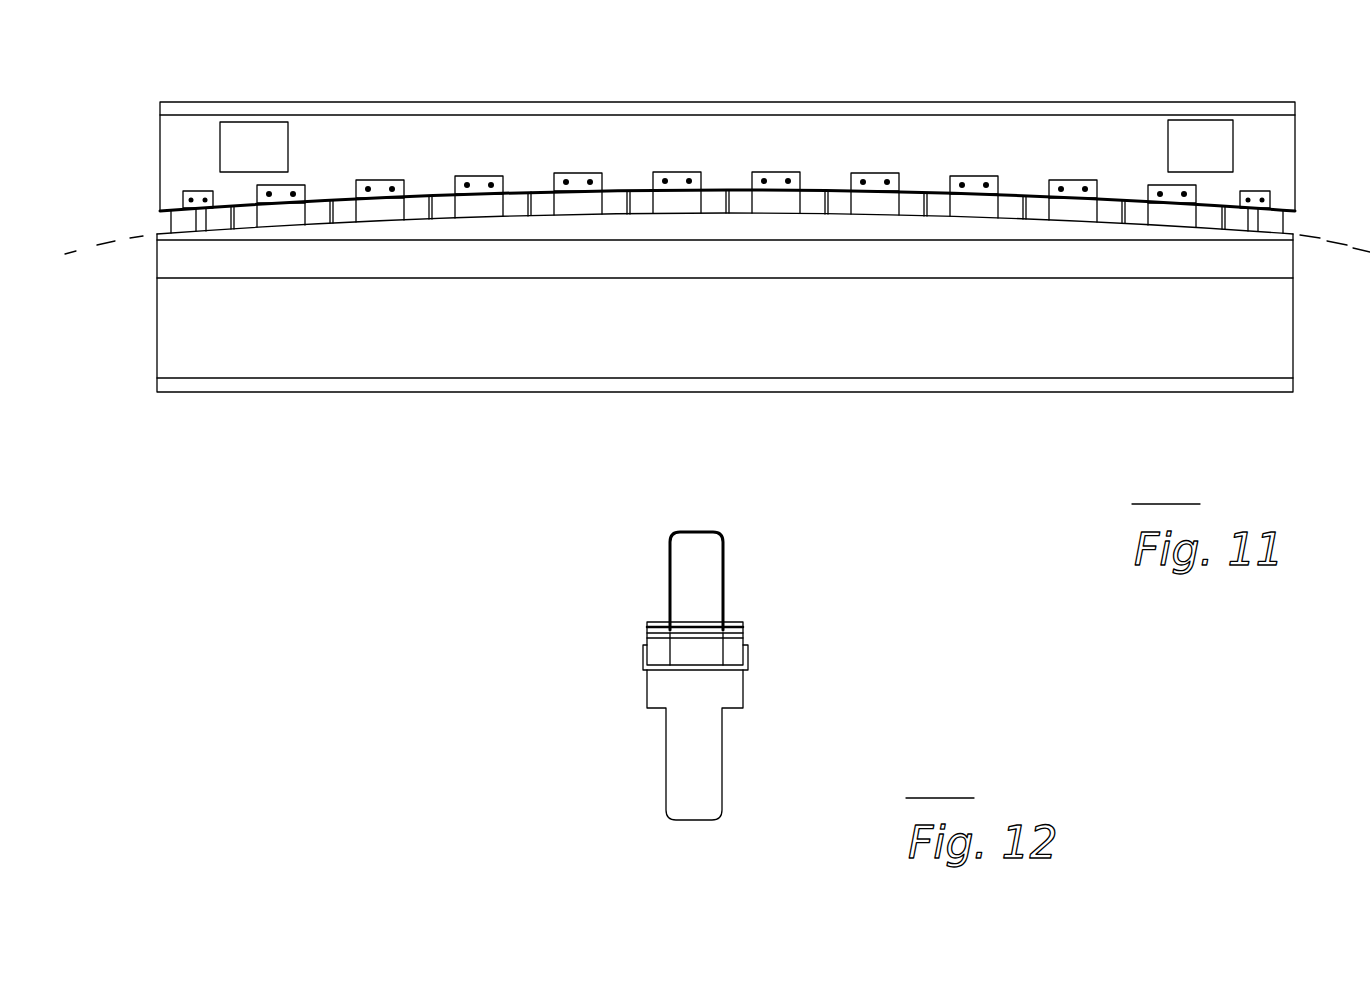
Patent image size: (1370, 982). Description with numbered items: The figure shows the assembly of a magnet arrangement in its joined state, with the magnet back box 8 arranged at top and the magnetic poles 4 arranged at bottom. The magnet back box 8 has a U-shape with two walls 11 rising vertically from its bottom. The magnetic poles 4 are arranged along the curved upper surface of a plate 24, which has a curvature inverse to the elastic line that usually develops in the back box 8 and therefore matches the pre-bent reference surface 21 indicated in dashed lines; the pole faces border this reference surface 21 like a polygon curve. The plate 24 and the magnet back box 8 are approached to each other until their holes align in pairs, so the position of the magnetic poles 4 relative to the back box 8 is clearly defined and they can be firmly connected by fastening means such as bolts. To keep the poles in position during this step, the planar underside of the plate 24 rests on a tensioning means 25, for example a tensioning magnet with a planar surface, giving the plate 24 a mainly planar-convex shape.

In FIG. 11, the magnetic pole 4 is at (993, 177).
In FIG. 12, the magnetic pole 4 is at (717, 653).
In FIG. 11, the magnet back box 8 is at (597, 102).
In FIG. 12, the magnet back box 8 is at (723, 568).
In FIG. 11, the wall 11 is at (347, 127).
In FIG. 11, the reference surface 21 is at (115, 243).
In FIG. 11, the plate 24 is at (556, 230).
In FIG. 12, the plate 24 is at (746, 669).
In FIG. 11, the tensioning means 25 is at (310, 362).
In FIG. 12, the tensioning means 25 is at (719, 790).